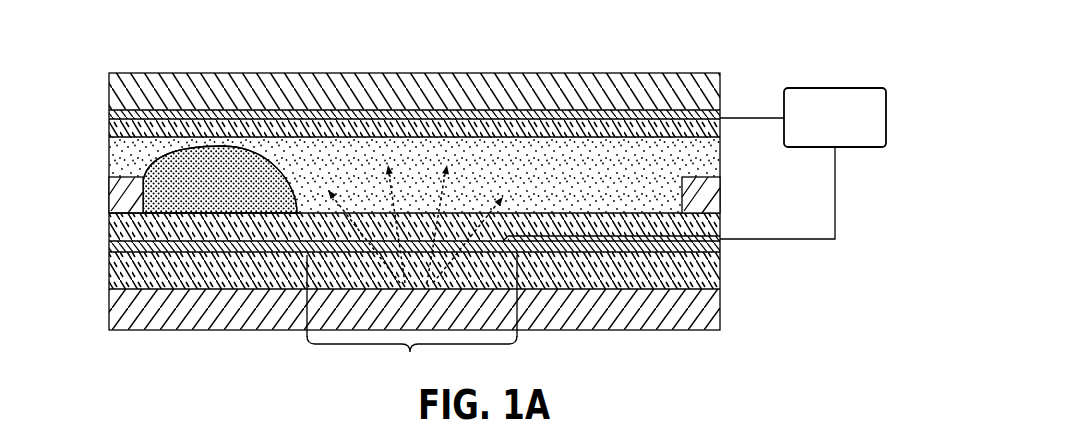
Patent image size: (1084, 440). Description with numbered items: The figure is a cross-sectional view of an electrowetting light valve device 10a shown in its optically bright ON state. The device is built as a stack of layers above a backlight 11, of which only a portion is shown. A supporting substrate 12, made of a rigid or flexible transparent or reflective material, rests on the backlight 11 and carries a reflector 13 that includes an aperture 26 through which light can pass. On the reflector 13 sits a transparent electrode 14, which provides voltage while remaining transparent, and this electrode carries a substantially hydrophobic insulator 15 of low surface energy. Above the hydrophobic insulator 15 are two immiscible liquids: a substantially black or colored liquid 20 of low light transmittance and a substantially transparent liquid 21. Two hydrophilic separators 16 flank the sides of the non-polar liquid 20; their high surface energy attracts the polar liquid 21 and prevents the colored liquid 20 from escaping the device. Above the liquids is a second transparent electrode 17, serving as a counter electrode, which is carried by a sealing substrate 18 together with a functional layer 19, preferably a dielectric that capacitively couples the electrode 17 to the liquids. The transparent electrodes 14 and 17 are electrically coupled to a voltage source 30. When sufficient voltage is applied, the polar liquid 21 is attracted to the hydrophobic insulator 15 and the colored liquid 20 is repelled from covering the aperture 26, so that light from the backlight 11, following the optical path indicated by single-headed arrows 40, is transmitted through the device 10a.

The electrowetting light valve device 10a is at (705, 37).
The backlight 11 is at (715, 316).
The supporting substrate 12 is at (112, 277).
The reflector 13 is at (110, 237).
The transparent electrode 14 is at (722, 221).
The hydrophobic insulator 15 is at (110, 222).
The hydrophilic separator 16 is at (111, 190).
The second transparent electrode 17 is at (111, 113).
The sealing substrate 18 is at (724, 100).
The functional layer 19 is at (111, 128).
The colored liquid 20 is at (152, 157).
The transparent liquid 21 is at (722, 163).
The aperture 26 is at (410, 352).
The voltage source 30 is at (862, 88).
The single-headed arrows 40 is at (440, 199).